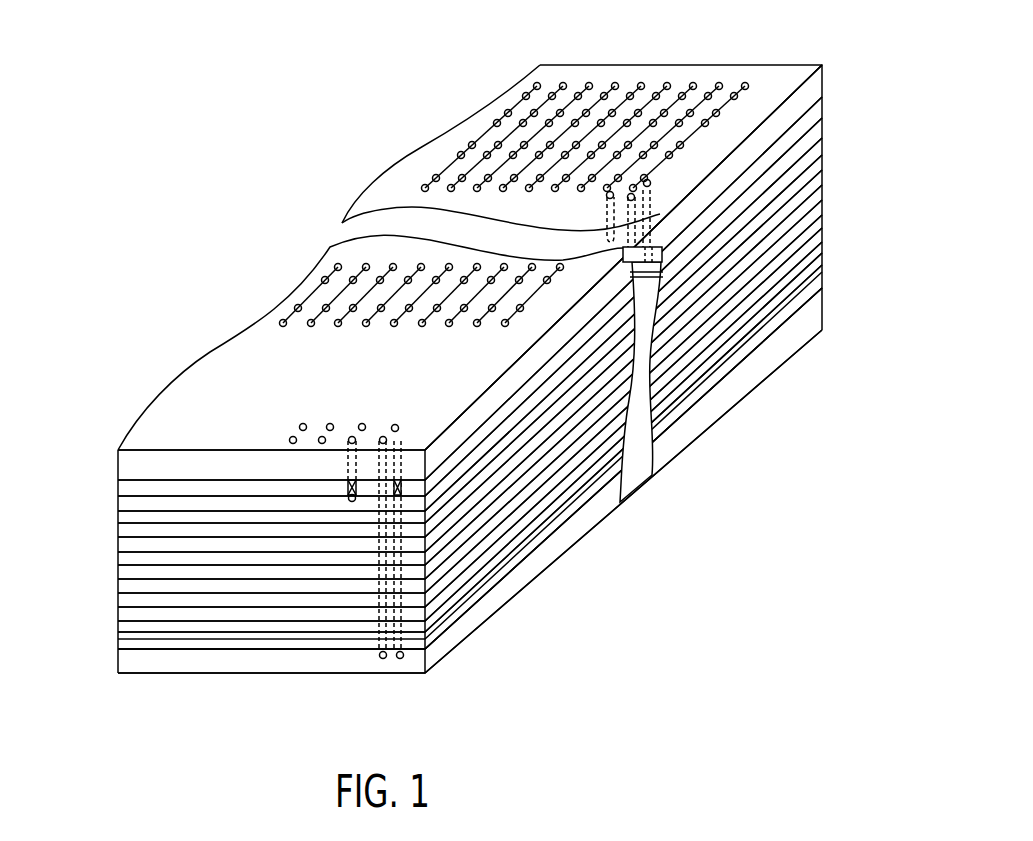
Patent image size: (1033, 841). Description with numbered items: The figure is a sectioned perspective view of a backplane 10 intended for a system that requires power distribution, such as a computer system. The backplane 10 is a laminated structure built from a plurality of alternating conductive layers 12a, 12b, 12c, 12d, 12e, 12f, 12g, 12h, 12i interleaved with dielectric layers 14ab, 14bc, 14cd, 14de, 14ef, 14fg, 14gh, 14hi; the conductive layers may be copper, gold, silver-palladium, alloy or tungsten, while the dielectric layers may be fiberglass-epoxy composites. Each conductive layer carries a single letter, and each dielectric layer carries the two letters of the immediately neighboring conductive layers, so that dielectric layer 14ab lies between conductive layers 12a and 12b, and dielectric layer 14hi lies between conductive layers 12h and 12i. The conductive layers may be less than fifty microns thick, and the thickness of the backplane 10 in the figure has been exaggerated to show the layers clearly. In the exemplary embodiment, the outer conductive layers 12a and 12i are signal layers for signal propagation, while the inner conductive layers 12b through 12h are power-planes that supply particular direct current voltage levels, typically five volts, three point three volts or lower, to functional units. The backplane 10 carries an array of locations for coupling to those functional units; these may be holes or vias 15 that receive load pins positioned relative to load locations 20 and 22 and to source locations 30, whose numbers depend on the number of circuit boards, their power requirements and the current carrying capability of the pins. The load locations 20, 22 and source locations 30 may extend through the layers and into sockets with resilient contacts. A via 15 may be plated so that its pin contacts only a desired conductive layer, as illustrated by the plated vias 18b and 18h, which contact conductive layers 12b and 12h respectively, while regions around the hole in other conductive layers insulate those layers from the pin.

The backplane 10 is at (120, 273).
The conductive layer 12a is at (484, 134).
The conductive layer 12b is at (118, 480).
The conductive layer 12c is at (118, 511).
The conductive layer 12d is at (118, 537).
The conductive layer 12e is at (118, 565).
The conductive layer 12f is at (118, 593).
The conductive layer 12g is at (168, 627).
The conductive layer 12h is at (236, 645).
The conductive layer 12i is at (308, 674).
The dielectric layer 14ab is at (118, 450).
The dielectric layer 14bc is at (118, 496).
The dielectric layer 14cd is at (118, 523).
The dielectric layer 14de is at (118, 552).
The dielectric layer 14ef is at (118, 579).
The dielectric layer 14fg is at (142, 612).
The dielectric layer 14gh is at (197, 637).
The dielectric layer 14hi is at (272, 655).
The via 15 is at (406, 443).
The plated via 18b is at (663, 257).
The plated via 18h is at (381, 661).
The load location 20 is at (274, 320).
The load location 22 is at (534, 83).
The source location 30 is at (396, 426).